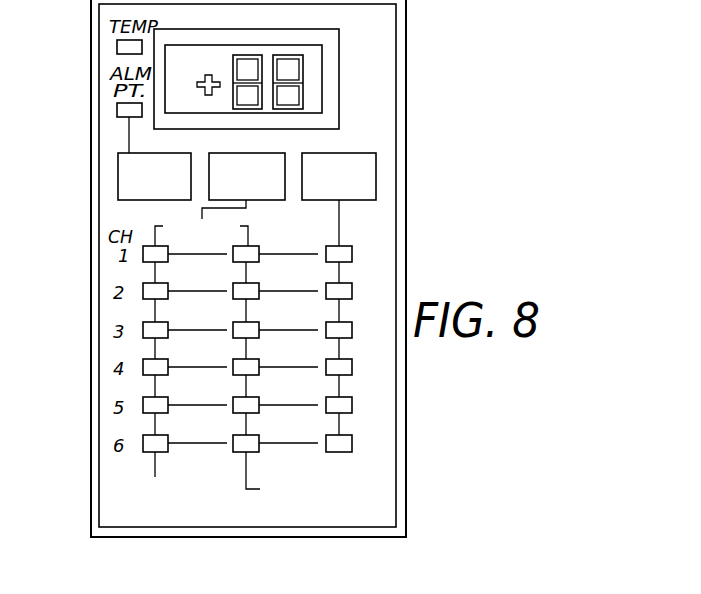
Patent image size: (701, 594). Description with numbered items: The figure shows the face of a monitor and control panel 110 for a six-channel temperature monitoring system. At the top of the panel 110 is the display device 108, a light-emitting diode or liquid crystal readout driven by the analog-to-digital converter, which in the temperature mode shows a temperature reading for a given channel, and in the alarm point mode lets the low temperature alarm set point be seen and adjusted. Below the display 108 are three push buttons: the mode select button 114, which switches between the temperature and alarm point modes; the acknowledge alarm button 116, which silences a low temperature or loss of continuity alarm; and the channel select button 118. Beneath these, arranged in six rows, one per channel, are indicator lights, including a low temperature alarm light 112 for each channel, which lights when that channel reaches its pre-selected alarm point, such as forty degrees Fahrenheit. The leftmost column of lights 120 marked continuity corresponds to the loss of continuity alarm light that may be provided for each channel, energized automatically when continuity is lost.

The display devices 108 is at (317, 65).
The monitor and control panel 110 is at (367, 225).
The low temperature alarm light 112 is at (250, 253).
The mode select button 114 is at (118, 180).
The acknowledge alarm button 116 is at (280, 155).
The channel select button 118 is at (370, 178).
The channel continuity indicator lights 120 is at (145, 257).